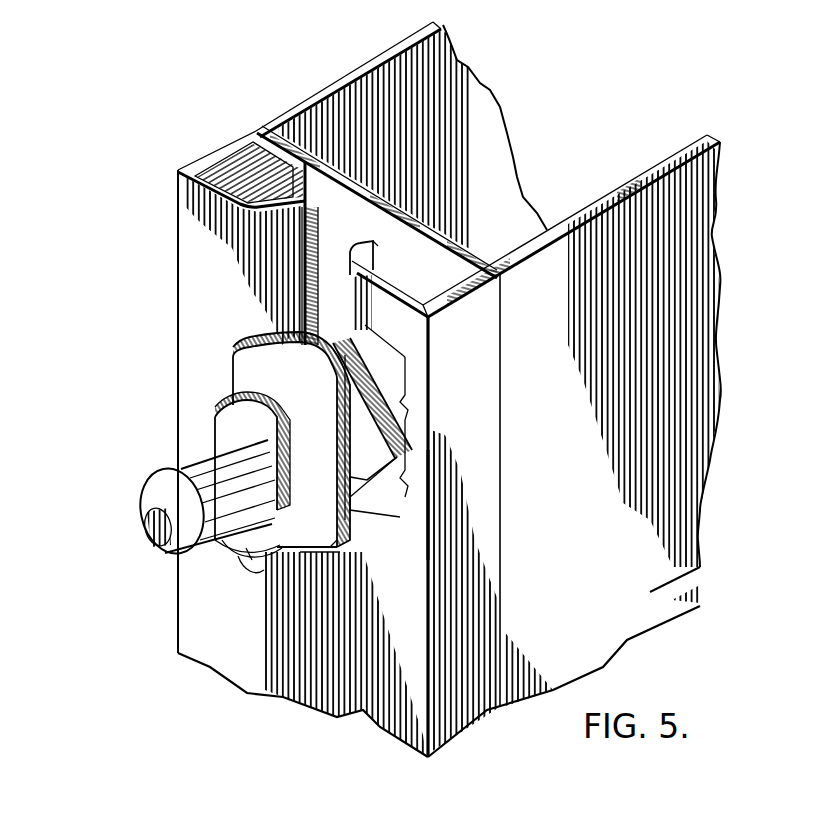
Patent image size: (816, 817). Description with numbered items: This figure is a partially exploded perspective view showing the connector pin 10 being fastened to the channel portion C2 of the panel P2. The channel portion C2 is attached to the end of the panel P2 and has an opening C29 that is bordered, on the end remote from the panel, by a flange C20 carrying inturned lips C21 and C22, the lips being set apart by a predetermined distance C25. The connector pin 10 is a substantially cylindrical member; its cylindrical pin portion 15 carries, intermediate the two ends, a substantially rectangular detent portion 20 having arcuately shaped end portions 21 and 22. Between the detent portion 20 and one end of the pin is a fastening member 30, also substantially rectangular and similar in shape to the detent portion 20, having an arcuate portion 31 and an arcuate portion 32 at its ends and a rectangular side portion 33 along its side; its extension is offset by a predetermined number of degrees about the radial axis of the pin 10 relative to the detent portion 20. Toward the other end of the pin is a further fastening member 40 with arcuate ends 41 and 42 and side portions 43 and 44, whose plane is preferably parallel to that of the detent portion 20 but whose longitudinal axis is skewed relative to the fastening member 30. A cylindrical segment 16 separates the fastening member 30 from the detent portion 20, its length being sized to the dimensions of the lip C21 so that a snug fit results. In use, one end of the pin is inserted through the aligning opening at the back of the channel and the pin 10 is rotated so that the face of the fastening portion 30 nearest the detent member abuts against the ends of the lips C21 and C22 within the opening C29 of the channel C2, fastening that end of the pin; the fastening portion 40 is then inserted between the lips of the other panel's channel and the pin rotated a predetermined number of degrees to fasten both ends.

The channel portion C2 is at (455, 648).
The flange C20 is at (245, 198).
The inturned lip C21 is at (238, 185).
The inturned lip C22 is at (368, 208).
The predetermined distance C25 is at (351, 251).
The channel opening C29 is at (232, 185).
The panel P2 is at (580, 543).
The connector pin 10 is at (228, 438).
The bolt 15 is at (187, 483).
The cylindrical segment 16 is at (418, 512).
The detent portion 20 is at (332, 590).
The end portion 21 is at (292, 342).
The end portion 22 is at (335, 555).
The fastening member 30 is at (385, 448).
The arcuate portion 31 is at (300, 318).
The arcuate portion 32 is at (383, 478).
The side portion 33 is at (368, 412).
The fastening member 40 is at (255, 590).
The arcuate end 41 is at (264, 402).
The arcuate end 42 is at (250, 548).
The side portion 43 is at (278, 568).
The side portion 44 is at (213, 418).